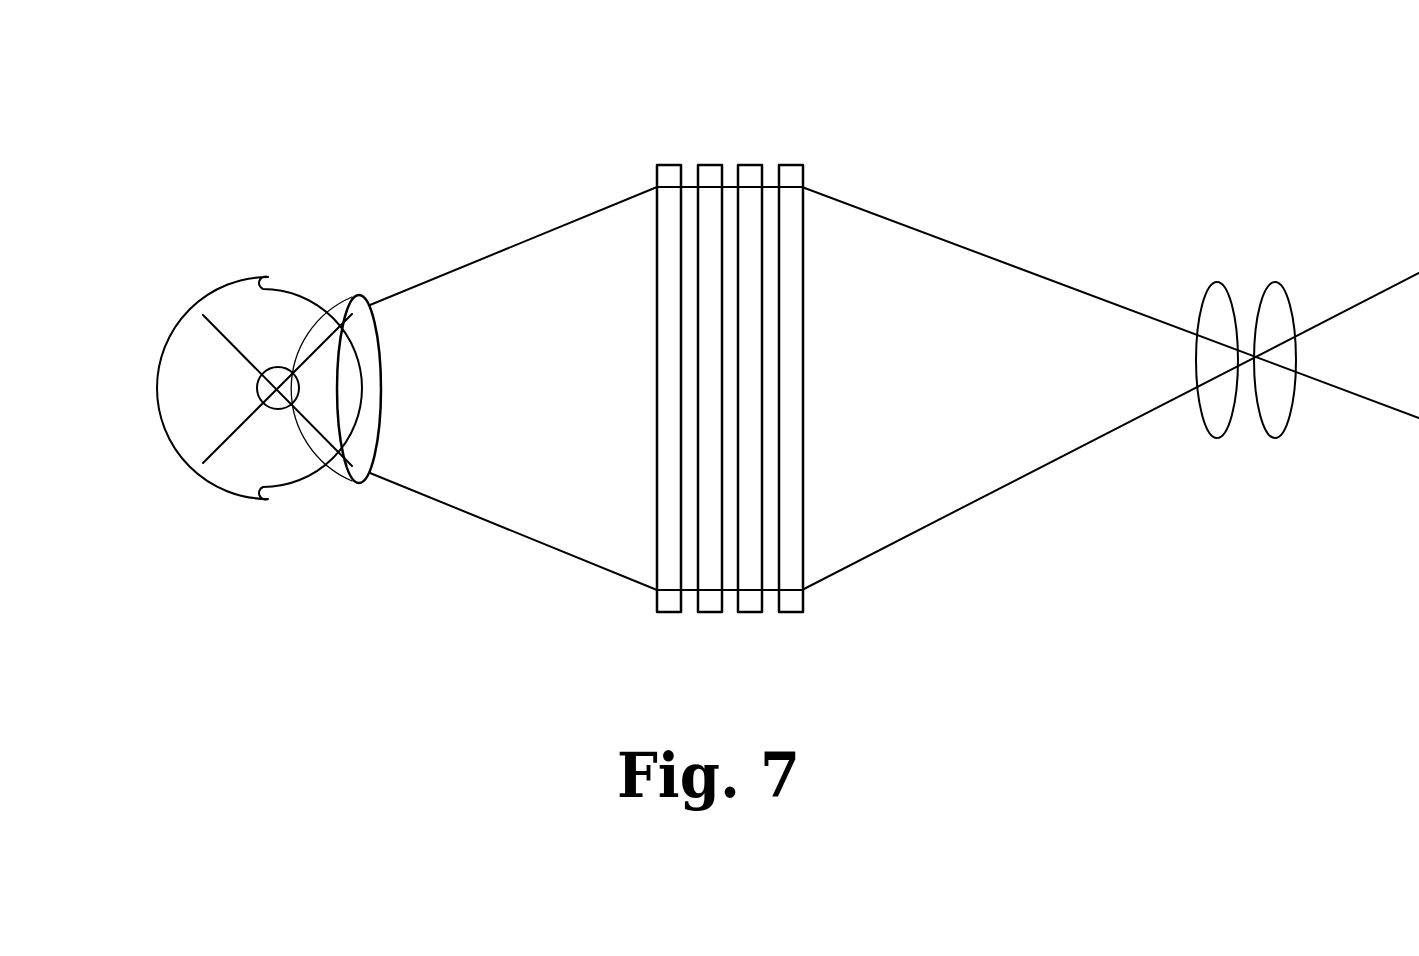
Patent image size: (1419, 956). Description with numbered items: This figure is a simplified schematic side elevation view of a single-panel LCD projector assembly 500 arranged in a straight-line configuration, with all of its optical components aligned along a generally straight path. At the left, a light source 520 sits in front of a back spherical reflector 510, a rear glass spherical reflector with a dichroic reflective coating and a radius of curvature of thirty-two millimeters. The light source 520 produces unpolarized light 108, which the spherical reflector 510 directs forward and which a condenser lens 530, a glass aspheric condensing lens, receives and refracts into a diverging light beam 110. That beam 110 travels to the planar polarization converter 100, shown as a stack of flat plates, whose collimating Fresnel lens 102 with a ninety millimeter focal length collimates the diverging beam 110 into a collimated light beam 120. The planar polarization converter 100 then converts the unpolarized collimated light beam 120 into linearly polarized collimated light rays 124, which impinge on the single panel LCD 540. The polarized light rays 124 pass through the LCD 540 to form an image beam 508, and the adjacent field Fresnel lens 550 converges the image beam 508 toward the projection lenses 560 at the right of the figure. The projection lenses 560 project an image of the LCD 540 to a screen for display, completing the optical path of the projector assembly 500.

The back spherical reflector 510 is at (208, 300).
The unpolarized light 108 is at (229, 339).
The light source 520 is at (283, 410).
The condenser lens 530 is at (350, 295).
The light beam 110 is at (493, 255).
The collimated light beam 120 is at (634, 356).
The linearly polarized collimated light rays 124 is at (753, 379).
The single panel LCD 540 is at (753, 165).
The field Fresnel lens 550 is at (792, 165).
The collimating Fresnel lens 102 is at (668, 613).
The planar polarization converter 100 is at (707, 613).
The image beam 508 is at (1020, 267).
The projection lenses 560 is at (1248, 287).
The single-panel LCD projector assembly 500 is at (1010, 549).